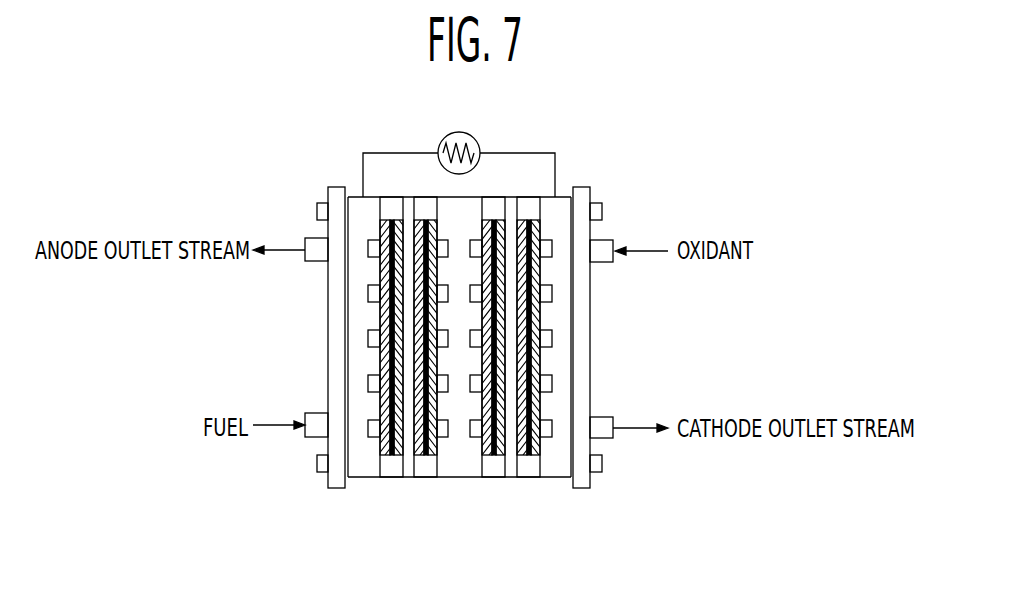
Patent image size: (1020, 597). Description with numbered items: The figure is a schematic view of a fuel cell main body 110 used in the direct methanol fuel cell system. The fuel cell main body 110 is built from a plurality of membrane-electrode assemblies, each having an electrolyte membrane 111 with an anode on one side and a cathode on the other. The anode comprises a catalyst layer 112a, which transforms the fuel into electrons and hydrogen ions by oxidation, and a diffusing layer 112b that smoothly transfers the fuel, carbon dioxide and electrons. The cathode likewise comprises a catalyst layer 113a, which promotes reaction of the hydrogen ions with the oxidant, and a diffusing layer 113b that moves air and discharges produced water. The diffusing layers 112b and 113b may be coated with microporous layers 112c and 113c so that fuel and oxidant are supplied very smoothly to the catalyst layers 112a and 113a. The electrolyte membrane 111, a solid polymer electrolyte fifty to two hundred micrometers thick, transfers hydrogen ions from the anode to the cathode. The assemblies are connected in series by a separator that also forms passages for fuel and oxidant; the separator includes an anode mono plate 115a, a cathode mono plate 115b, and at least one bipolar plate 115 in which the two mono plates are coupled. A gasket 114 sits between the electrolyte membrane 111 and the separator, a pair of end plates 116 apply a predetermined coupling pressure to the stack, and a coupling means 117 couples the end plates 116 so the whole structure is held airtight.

The fuel cell main body 110 is at (250, 142).
The electrolyte membrane 111 is at (408, 468).
The catalyst layer 112a is at (397, 455).
The diffusing layer 112b is at (388, 455).
The microporous layer 112c is at (387, 317).
The catalyst layer 113a is at (423, 455).
The diffusing layer 113b is at (433, 448).
The microporous layer 113c is at (532, 324).
The gasket 114 is at (495, 473).
The bipolar plate 115 is at (463, 467).
The anode mono plate 115a is at (360, 470).
The cathode mono plate 115b is at (555, 468).
The end plate 116 is at (585, 478).
The coupling means 117 is at (602, 463).